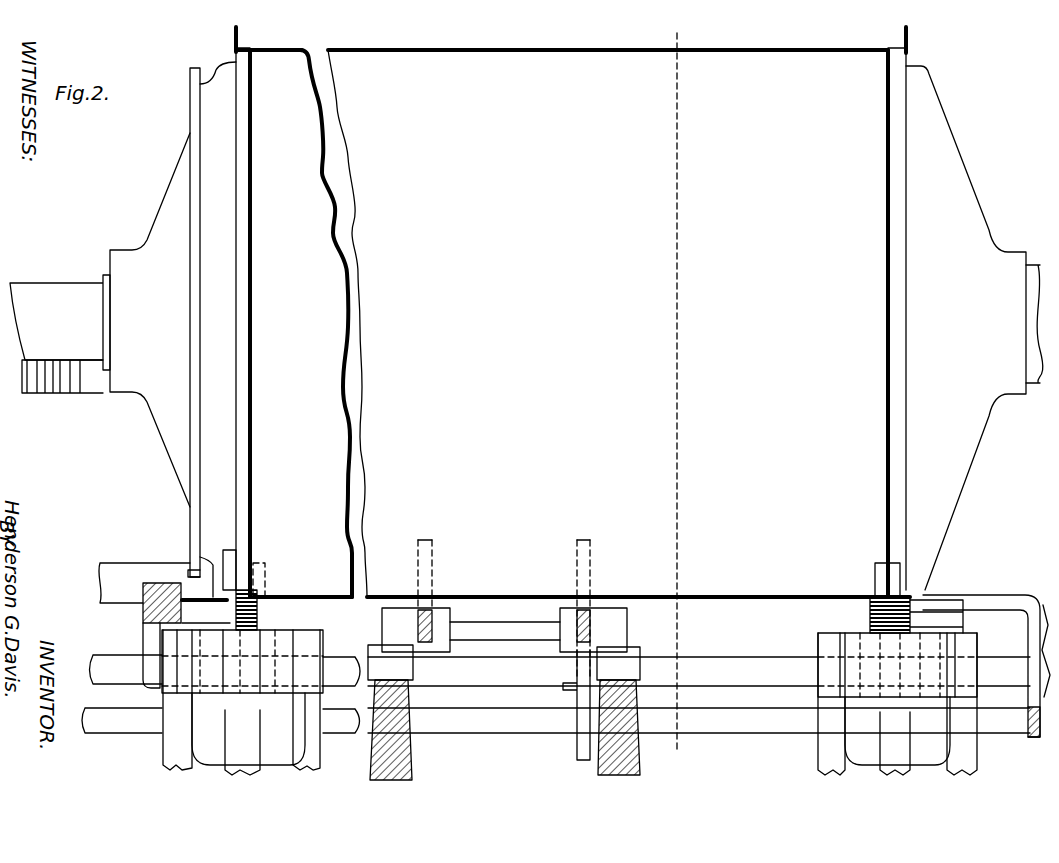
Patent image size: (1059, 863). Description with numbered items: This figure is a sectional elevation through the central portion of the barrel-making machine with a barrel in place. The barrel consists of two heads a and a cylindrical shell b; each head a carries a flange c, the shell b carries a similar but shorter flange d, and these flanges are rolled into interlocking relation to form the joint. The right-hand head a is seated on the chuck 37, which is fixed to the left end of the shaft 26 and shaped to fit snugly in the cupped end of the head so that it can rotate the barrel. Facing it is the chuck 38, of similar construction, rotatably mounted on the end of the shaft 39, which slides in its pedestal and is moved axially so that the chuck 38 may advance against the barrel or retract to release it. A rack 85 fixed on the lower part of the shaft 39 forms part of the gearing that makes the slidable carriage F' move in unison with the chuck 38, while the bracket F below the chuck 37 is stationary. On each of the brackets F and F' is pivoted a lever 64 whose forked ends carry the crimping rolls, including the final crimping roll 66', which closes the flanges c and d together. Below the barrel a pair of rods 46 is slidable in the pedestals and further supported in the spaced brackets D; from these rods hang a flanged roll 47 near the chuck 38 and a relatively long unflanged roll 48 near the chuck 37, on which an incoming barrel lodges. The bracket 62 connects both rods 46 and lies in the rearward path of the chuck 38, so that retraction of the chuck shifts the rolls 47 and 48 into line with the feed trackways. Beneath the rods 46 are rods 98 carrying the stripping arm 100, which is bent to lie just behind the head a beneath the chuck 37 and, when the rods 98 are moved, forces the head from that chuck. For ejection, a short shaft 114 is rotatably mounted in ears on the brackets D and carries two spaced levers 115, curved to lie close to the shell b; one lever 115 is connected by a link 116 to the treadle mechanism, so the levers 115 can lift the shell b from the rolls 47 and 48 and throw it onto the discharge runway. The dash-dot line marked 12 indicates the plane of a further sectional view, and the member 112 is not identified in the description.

The barrel head a is at (253, 232).
The cylindrical shell b is at (462, 53).
The flange c is at (234, 33).
The flange d is at (240, 44).
The section line 12 is at (698, 40).
The shaft 26 is at (1031, 265).
The chuck 37 is at (966, 328).
The chuck 38 is at (150, 320).
The shaft 39 is at (60, 322).
The rods 46 is at (110, 655).
The flanged roll 47 is at (272, 595).
The unflanged roll 48 is at (875, 598).
The bracket 62 is at (147, 630).
The lever 64 is at (569, 697).
The roll 66' is at (576, 563).
The rack 85 is at (47, 393).
The rod 98 is at (93, 723).
The arm 100 is at (982, 602).
The plate 112 is at (190, 133).
The short shaft 114 is at (497, 626).
The levers 115 is at (433, 620).
The link 116 is at (575, 746).
The brackets D is at (410, 768).
The bracket F is at (973, 706).
The slidable bracket or carriage F' is at (511, 705).